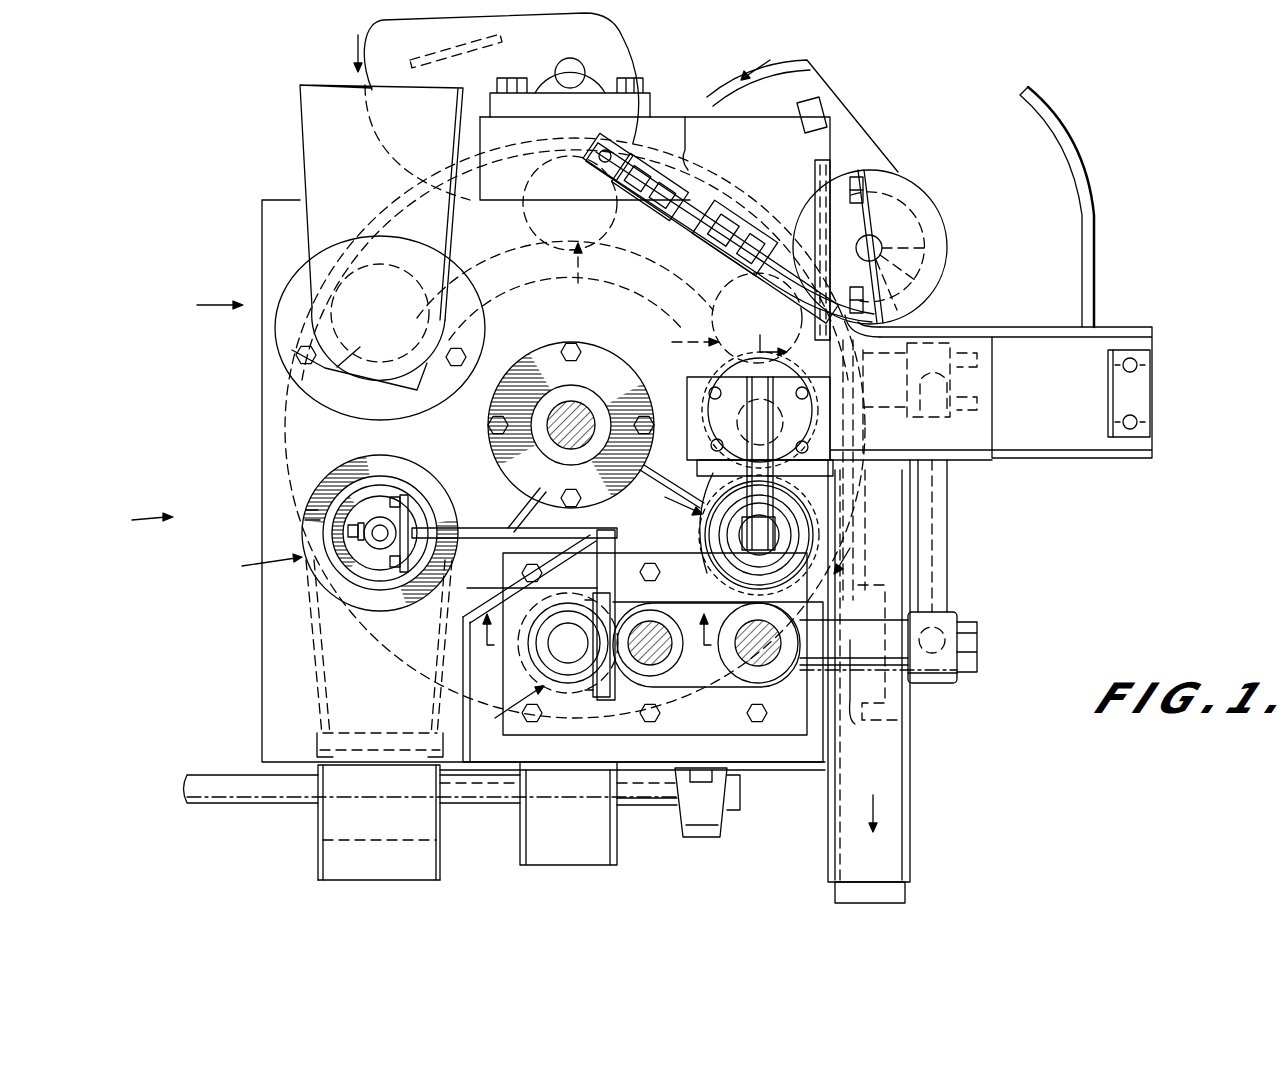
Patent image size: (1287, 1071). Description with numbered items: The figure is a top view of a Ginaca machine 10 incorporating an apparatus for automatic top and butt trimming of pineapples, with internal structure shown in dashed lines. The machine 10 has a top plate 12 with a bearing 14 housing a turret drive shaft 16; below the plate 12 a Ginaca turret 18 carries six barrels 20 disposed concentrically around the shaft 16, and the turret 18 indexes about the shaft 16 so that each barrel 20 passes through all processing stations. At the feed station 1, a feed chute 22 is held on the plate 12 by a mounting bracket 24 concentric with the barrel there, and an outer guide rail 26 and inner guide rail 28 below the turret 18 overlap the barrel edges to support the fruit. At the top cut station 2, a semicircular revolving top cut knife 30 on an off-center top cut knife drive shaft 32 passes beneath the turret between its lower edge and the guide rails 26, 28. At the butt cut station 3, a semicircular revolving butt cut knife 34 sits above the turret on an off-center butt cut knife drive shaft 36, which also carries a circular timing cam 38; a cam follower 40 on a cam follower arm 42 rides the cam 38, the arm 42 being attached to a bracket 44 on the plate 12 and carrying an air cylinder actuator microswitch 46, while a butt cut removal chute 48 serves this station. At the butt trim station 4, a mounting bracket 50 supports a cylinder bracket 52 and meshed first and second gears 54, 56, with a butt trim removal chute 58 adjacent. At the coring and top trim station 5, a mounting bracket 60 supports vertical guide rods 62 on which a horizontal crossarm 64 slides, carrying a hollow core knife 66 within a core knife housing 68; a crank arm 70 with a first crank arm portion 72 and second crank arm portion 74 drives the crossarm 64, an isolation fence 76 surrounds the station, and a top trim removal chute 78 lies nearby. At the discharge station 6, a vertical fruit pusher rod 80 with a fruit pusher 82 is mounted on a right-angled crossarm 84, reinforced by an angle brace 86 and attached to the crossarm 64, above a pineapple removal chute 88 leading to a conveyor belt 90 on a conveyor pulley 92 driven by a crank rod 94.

The feed station 1 is at (209, 305).
The top cut station 2 is at (729, 420).
The butt cut station 3 is at (597, 502).
The butt trim station 4 is at (671, 501).
The coring and top trim station 5 is at (507, 709).
The discharge station 6 is at (260, 566).
The Ginaca machine 10 is at (135, 520).
The top plate 12 is at (285, 710).
The bearing 14 is at (523, 354).
The turret drive shaft 16 is at (548, 437).
The Ginaca turret 18 is at (292, 423).
The barrels 20 is at (358, 347).
The feed chute 22 is at (307, 153).
The mounting bracket 24 is at (293, 273).
The outer guide rail 26 is at (396, 222).
The inner guide rail 28 is at (512, 268).
The top cut knife 30 is at (612, 30).
The top cut knife drive shaft 32 is at (586, 68).
The butt cut knife 34 is at (852, 136).
The butt cut knife drive shaft 36 is at (883, 246).
The timing cam 38 is at (934, 222).
The cam follower 40 is at (903, 320).
The cam follower arm 42 is at (703, 196).
The bracket 44 is at (684, 128).
The air cylinder actuator microswitch 46 is at (746, 218).
The butt cut removal chute 48 is at (1048, 345).
The mounting bracket 50 is at (696, 392).
The cylinder bracket 52 is at (722, 466).
The first gear 54 is at (697, 445).
The second gear 56 is at (700, 528).
The butt trim removal chute 58 is at (828, 838).
The mounting bracket 60 is at (718, 725).
The vertical guide rods 62 is at (668, 672).
The horizontal crossarm 64 is at (876, 670).
The hollow core knife 66 is at (540, 658).
The core knife housing 68 is at (546, 612).
The crank arm 70 is at (988, 590).
The first crank arm portion 72 is at (865, 527).
The second crank arm portion 74 is at (946, 487).
The isolation fence 76 is at (516, 514).
The top trim removal chute 78 is at (595, 862).
The fruit pusher rod 80 is at (383, 520).
The fruit pusher 82 is at (345, 497).
The right-angled crossarm 84 is at (455, 540).
The angle brace 86 is at (628, 522).
The pineapple removal chute 88 is at (330, 668).
The conveyor belt 90 is at (326, 870).
The conveyor pulley 92 is at (322, 825).
The crank rod 94 is at (255, 790).